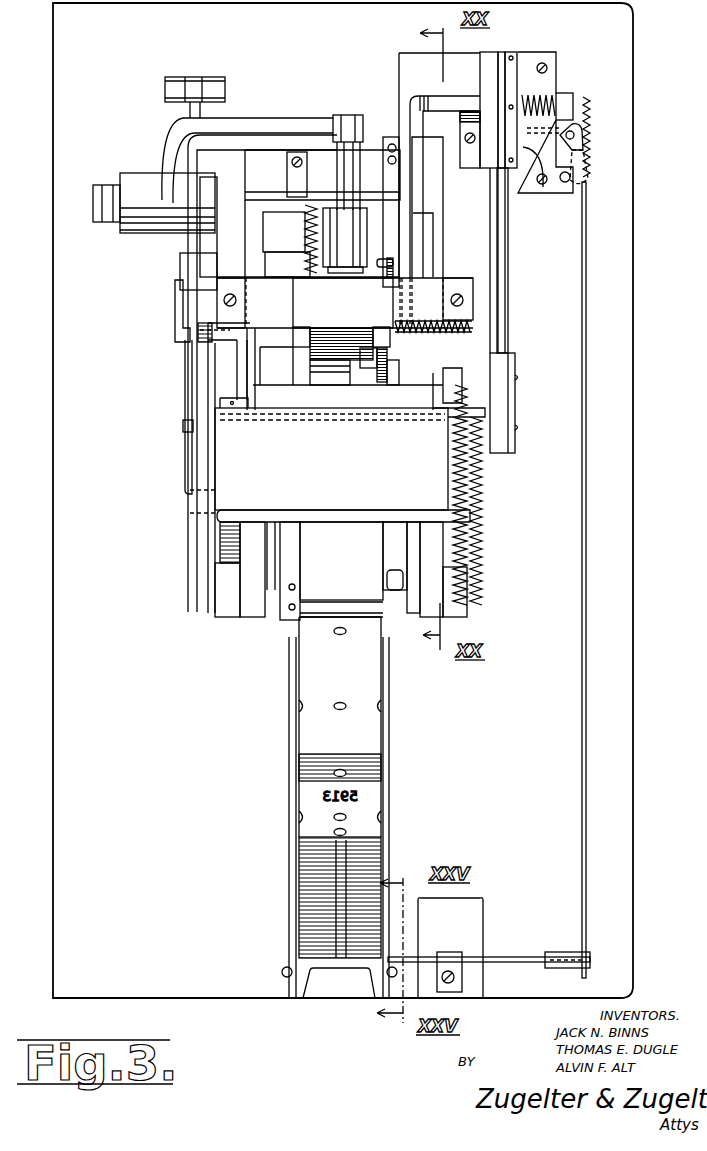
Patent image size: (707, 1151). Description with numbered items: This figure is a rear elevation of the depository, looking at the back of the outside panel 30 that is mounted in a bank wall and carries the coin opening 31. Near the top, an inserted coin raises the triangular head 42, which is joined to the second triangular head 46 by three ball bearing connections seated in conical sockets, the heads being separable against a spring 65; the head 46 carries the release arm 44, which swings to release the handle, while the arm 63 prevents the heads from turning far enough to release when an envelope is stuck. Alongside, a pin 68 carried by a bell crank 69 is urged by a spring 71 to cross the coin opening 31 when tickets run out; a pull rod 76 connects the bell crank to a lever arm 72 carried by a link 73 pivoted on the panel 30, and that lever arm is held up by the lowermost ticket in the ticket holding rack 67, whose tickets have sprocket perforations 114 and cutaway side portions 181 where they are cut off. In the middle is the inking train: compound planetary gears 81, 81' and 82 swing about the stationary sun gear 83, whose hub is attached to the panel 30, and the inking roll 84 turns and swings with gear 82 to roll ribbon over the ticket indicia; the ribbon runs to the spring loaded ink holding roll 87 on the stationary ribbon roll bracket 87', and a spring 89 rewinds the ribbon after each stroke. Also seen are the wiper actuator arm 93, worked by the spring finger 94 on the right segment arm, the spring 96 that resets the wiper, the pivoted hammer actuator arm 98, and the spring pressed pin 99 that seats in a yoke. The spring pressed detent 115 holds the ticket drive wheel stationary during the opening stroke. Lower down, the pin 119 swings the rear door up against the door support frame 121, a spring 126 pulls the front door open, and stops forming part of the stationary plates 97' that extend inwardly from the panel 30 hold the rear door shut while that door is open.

The outside panel 30 is at (635, 756).
The coin opening 31 is at (548, 185).
The triangular head 42 is at (517, 72).
The release arm 44 is at (509, 262).
The second triangular head 46 is at (490, 58).
The arm 63 is at (401, 124).
The spring 65 is at (545, 93).
The ticket holding rack 67 is at (385, 847).
The pin 68 is at (580, 142).
The bell crank 69 is at (572, 178).
The spring 71 is at (591, 123).
The lever arm 72 is at (498, 955).
The link 73 is at (462, 975).
The pull rod 76 is at (588, 822).
The planetary gear 81 is at (407, 361).
The planetary gear 81' is at (357, 399).
The planetary gear 82 is at (380, 378).
The sun gear 83 is at (393, 263).
The inking roll 84 is at (327, 368).
The ink holding roll 87 is at (340, 390).
The ribbon roll bracket 87' is at (343, 303).
The spring 89 is at (470, 340).
The actuator arm 93 is at (190, 342).
The spring finger 94 is at (185, 382).
The spring 96 is at (300, 235).
The plates 97' is at (154, 220).
The hammer actuator arm 98 is at (198, 171).
The spring pressed pin 99 is at (187, 462).
The perforations 114 is at (327, 633).
The spring pressed detent 115 is at (303, 555).
The pin 119 is at (207, 524).
The door support frame 121 is at (447, 470).
The spring 126 is at (480, 525).
The cutaway side portions 181 is at (378, 818).